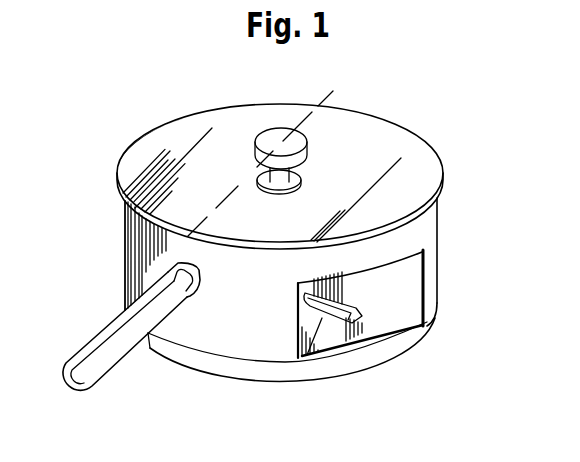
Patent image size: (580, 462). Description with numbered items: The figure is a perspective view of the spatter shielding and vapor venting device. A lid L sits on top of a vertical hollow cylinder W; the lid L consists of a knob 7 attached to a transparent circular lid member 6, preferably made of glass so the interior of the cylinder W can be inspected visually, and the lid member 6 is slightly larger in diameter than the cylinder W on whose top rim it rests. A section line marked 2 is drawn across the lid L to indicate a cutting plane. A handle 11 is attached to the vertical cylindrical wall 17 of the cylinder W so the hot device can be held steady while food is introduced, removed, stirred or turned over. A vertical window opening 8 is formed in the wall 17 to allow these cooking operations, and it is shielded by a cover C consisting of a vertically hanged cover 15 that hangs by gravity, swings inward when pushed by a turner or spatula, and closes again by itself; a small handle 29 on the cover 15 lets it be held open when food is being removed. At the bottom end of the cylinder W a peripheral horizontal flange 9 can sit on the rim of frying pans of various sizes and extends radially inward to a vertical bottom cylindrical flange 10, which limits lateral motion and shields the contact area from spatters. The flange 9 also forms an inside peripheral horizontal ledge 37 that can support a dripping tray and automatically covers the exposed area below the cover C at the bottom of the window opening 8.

The lid L is at (233, 104).
The transparent circular lid member 6 is at (438, 177).
The knob 7 is at (285, 140).
The section line 2- 2 is at (352, 83).
The vertical hollow cylinder W is at (116, 242).
The vertical window opening 8 is at (427, 297).
The peripheral horizontal flange 9 is at (428, 326).
The vertical bottom cylindrical flange 10 is at (380, 362).
The vertically hanged cover 15 is at (398, 286).
The cover C is at (378, 283).
The vertical cylindrical wall 17 is at (428, 254).
The inside peripheral horizontal ledge 37 is at (355, 347).
The handle for cover 29 is at (331, 316).
The handle 11 is at (108, 372).